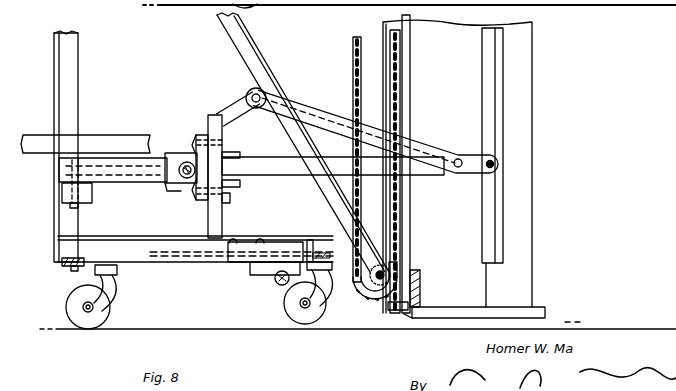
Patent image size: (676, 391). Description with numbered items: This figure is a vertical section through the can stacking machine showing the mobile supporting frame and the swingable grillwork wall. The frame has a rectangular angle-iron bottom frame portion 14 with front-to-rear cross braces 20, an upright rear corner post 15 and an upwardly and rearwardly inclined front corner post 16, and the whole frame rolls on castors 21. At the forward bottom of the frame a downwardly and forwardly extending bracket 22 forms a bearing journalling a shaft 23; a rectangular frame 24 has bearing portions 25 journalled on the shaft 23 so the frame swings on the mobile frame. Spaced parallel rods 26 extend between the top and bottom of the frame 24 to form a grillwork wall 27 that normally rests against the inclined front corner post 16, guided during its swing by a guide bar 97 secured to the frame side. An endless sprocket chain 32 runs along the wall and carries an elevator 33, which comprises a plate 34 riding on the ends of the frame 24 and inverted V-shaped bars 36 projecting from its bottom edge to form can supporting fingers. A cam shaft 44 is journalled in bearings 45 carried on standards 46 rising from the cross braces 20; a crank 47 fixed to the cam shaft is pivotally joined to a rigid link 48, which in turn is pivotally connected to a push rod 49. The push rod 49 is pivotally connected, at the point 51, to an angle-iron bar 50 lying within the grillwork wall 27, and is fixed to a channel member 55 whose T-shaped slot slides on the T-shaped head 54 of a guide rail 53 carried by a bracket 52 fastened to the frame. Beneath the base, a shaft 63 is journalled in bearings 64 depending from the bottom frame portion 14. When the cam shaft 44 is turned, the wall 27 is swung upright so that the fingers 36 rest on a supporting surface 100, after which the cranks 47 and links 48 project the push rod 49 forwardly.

The bottom frame portion 14 is at (62, 263).
The upright rear corner post 15 is at (54, 107).
The front corner post 16 is at (262, 70).
The cross brace 20 is at (142, 253).
The castor 21 is at (84, 326).
The bracket 22 is at (358, 262).
The shaft 23 is at (386, 273).
The rectangular frame 24 is at (401, 311).
The bearing portion 25 is at (372, 298).
The rod 26 is at (411, 62).
The grillwork wall 27 is at (419, 216).
The endless sprocket chain 32 is at (353, 74).
The elevator 33 is at (426, 302).
The plate 34 is at (407, 318).
The bar 36 is at (545, 311).
The cam shaft 44 is at (185, 162).
The bearing 45 is at (197, 198).
The standard 46 is at (222, 236).
The crank 47 is at (240, 112).
The rigid link 48 is at (415, 144).
The push rod 49 is at (418, 176).
The bar of angle iron 50 is at (505, 205).
The pivotal connection 51 is at (493, 162).
The bracket 52 is at (58, 195).
The guide rail 53 is at (130, 176).
The T-shaped head 54 is at (113, 182).
The channel member 55 is at (168, 188).
The shaft 63 is at (276, 284).
The bearing 64 is at (284, 292).
The guide bar 97 is at (33, 153).
The supporting surface 100 is at (565, 322).